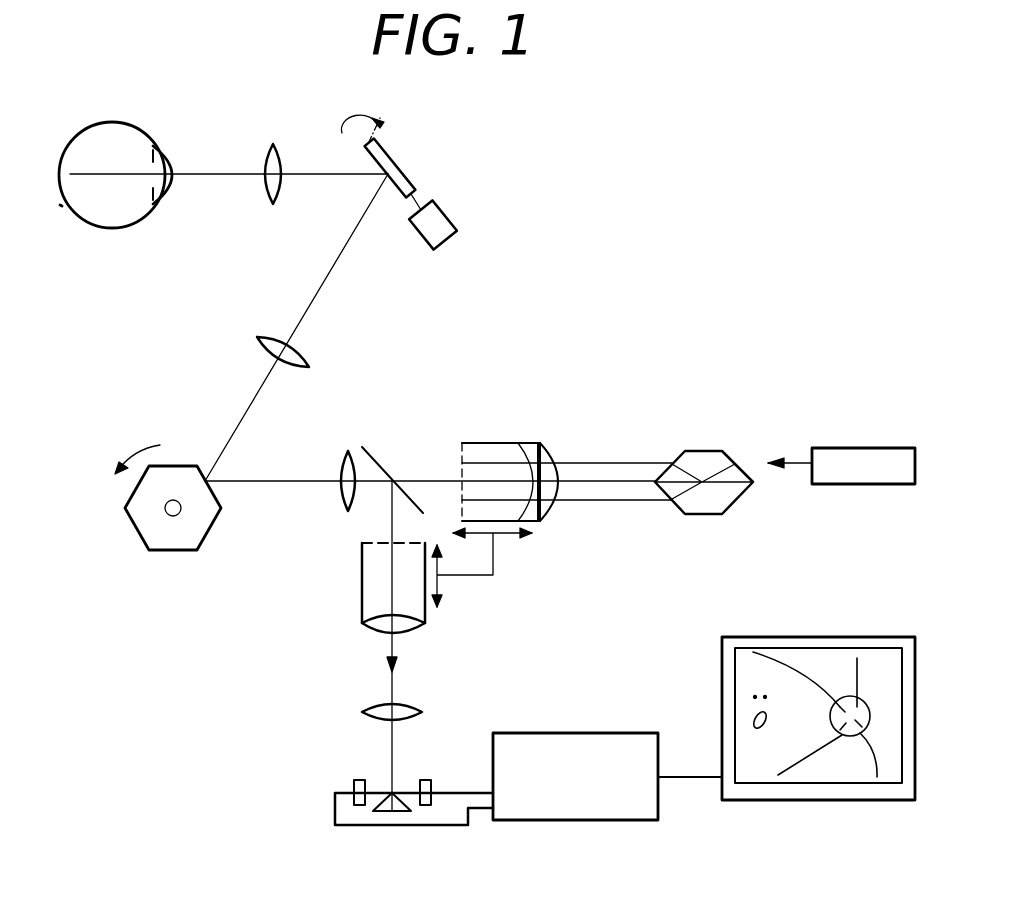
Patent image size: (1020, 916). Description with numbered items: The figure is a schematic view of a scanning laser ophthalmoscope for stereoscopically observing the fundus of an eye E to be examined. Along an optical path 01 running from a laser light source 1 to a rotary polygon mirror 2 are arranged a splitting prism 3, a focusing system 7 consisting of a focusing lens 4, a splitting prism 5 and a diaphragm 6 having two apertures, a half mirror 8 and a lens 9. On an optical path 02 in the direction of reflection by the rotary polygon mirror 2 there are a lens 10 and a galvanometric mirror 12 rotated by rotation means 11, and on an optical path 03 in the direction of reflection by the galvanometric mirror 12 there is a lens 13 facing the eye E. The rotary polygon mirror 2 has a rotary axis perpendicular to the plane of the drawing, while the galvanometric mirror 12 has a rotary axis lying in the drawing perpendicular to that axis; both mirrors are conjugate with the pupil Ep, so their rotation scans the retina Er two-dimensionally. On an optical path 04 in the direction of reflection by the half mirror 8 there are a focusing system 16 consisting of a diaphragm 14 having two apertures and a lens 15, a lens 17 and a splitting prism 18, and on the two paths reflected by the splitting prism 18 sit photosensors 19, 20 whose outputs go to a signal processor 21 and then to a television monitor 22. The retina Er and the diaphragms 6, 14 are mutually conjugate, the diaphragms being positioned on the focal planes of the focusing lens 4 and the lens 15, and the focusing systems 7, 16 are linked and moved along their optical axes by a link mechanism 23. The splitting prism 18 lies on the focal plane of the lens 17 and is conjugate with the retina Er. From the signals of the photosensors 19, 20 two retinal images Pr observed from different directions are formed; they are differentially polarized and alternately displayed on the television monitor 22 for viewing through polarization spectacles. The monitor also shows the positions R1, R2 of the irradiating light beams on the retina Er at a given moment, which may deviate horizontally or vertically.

The laser light source 1 is at (860, 448).
The rotary polygon mirror 2 is at (128, 522).
The splitting prism 3 is at (695, 452).
The focusing lens 4 is at (553, 458).
The splitting prism 5 is at (535, 455).
The diaphragm 6 is at (462, 452).
The focusing system 7 is at (482, 443).
The half mirror 8 is at (376, 460).
The lens 9 is at (340, 468).
The lens 10 is at (265, 345).
The rotation means 11 is at (452, 214).
The galvanometric mirror 12 is at (397, 162).
The lens 13 is at (268, 152).
The diaphragm 14 is at (370, 543).
The lens 15 is at (358, 625).
The focusing system 16 is at (360, 585).
The lens 17 is at (372, 706).
The splitting prism 18 is at (392, 828).
The photosensor 19 is at (352, 787).
The photosensor 20 is at (432, 787).
The signal processor 21 is at (560, 733).
The television monitor 22 is at (760, 802).
The link mechanism 23 is at (465, 576).
The eye to be examined E is at (107, 122).
The pupil Ep is at (160, 148).
The retina Er is at (62, 205).
The optical path 01 is at (607, 481).
The optical path 02 is at (324, 272).
The optical path 03 is at (305, 170).
The optical path 04 is at (405, 650).
The position of irradiating light beam R1 is at (755, 697).
The position of irradiating light beam R2 is at (765, 697).
The retinal image Pr is at (840, 655).